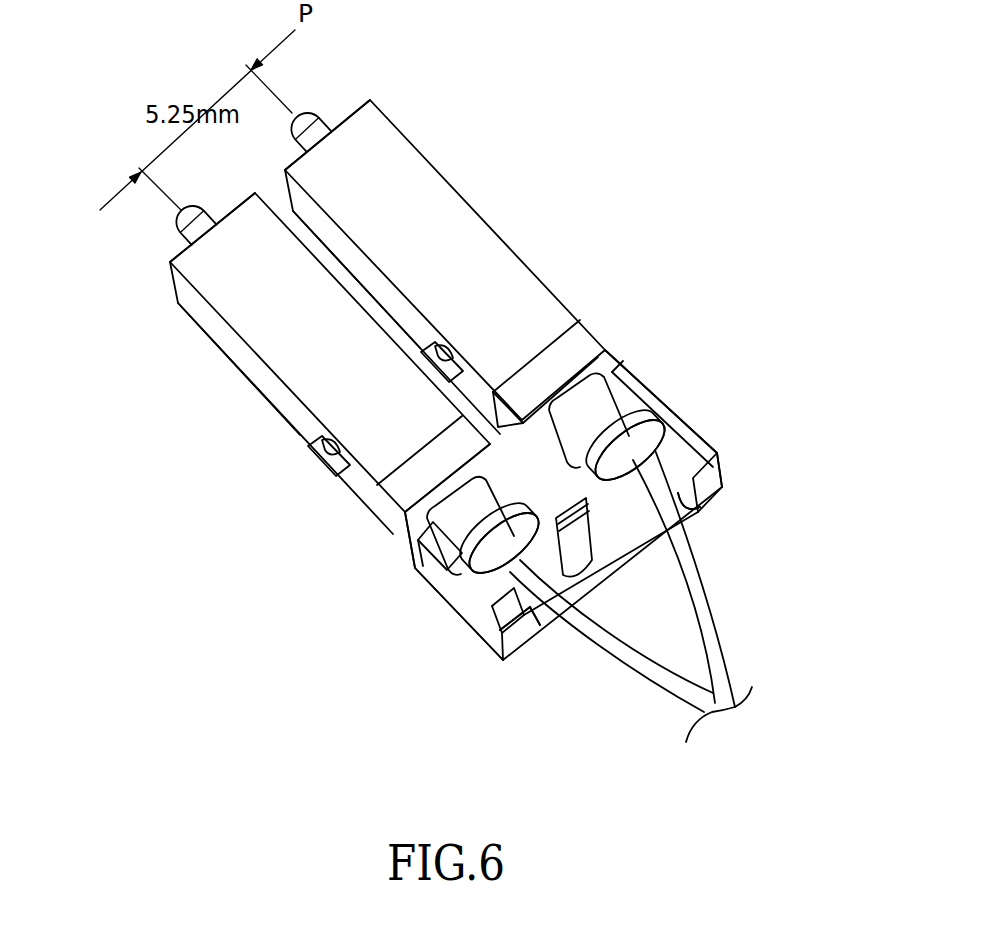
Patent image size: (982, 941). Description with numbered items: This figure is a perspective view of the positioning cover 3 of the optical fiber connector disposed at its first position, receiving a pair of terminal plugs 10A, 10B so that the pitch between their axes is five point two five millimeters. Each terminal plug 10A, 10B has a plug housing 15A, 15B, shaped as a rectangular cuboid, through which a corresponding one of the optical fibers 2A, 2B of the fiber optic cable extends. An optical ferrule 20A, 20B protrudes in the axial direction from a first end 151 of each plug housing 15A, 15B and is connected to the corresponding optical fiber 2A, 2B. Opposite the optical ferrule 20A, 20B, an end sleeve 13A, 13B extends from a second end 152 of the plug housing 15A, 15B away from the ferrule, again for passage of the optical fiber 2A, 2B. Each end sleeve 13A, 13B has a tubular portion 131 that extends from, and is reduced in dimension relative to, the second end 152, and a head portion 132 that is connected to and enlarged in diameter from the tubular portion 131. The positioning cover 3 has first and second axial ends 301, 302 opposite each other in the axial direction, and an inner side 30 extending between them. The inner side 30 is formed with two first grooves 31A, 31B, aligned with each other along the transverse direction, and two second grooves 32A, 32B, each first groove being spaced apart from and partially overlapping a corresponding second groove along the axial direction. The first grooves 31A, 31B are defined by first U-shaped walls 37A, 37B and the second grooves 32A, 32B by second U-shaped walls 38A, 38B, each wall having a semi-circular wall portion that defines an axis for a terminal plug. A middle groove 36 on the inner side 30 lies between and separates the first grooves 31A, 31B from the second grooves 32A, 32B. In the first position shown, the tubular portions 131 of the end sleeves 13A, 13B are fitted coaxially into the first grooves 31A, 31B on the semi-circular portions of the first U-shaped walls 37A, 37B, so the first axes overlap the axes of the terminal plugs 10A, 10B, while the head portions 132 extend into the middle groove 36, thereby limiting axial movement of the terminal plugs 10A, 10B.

The optical fiber 2A is at (657, 683).
The optical fiber 2B is at (718, 650).
The positioning cover 3 is at (735, 433).
The terminal plug 10A is at (198, 372).
The terminal plug 10B is at (425, 108).
The end sleeve 13A is at (437, 488).
The end sleeve 13B is at (610, 403).
The plug housing 15A is at (208, 290).
The plug housing 15B is at (417, 178).
The optical ferrule 20A is at (177, 222).
The optical ferrule 20B is at (328, 113).
The inner side 30 is at (686, 470).
The first groove 31A is at (463, 563).
The first groove 31B is at (618, 383).
The second groove 32A is at (680, 495).
The second groove 32B is at (547, 627).
The middle groove 36 is at (560, 567).
The first U-shaped wall 37A is at (504, 543).
The first U-shaped wall 37B is at (630, 450).
The second U-shaped wall 38A is at (689, 501).
The second U-shaped wall 38B is at (535, 616).
The tubular portion 131 is at (560, 387).
The head portion 132 is at (640, 417).
The first end 151 is at (170, 263).
The second end 152 is at (583, 360).
The first axial end 301 is at (405, 548).
The second axial end 302 is at (713, 477).